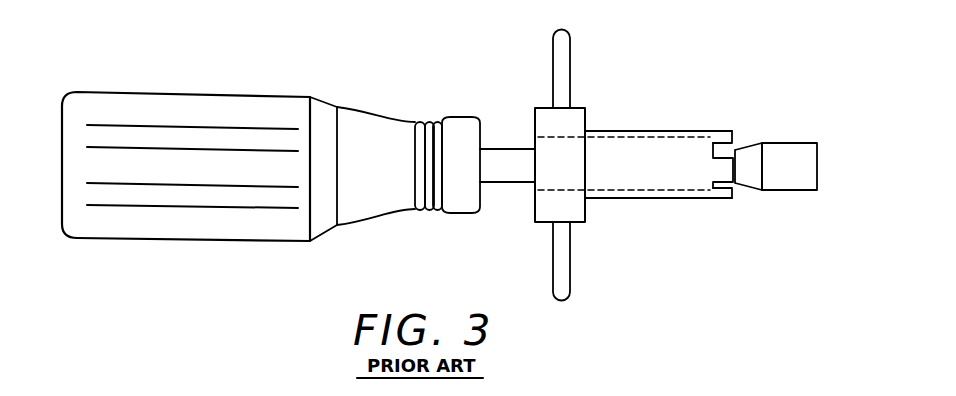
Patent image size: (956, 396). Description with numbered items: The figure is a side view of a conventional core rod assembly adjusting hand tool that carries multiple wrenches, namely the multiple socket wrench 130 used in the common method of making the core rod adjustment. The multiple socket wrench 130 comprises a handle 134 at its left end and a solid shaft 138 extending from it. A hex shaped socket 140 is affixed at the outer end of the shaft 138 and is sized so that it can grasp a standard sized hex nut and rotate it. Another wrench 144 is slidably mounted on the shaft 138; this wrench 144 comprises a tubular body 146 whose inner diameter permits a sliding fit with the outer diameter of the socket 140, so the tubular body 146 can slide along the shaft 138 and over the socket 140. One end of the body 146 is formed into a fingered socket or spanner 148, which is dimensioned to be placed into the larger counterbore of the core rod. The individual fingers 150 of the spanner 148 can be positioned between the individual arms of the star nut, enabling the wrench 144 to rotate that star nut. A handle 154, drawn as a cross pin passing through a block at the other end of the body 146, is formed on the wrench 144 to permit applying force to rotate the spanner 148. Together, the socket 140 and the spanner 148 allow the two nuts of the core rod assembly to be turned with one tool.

The multiple socket wrench 130 is at (450, 95).
The handle 134 is at (388, 169).
The solid shaft 138 is at (512, 160).
The hex shaped socket 140 is at (788, 152).
The wrench 144 is at (647, 128).
The tubular body 146 is at (661, 172).
The fingered socket or spanner 148 is at (723, 166).
The fingers 150 is at (735, 162).
The handle 154 is at (562, 63).